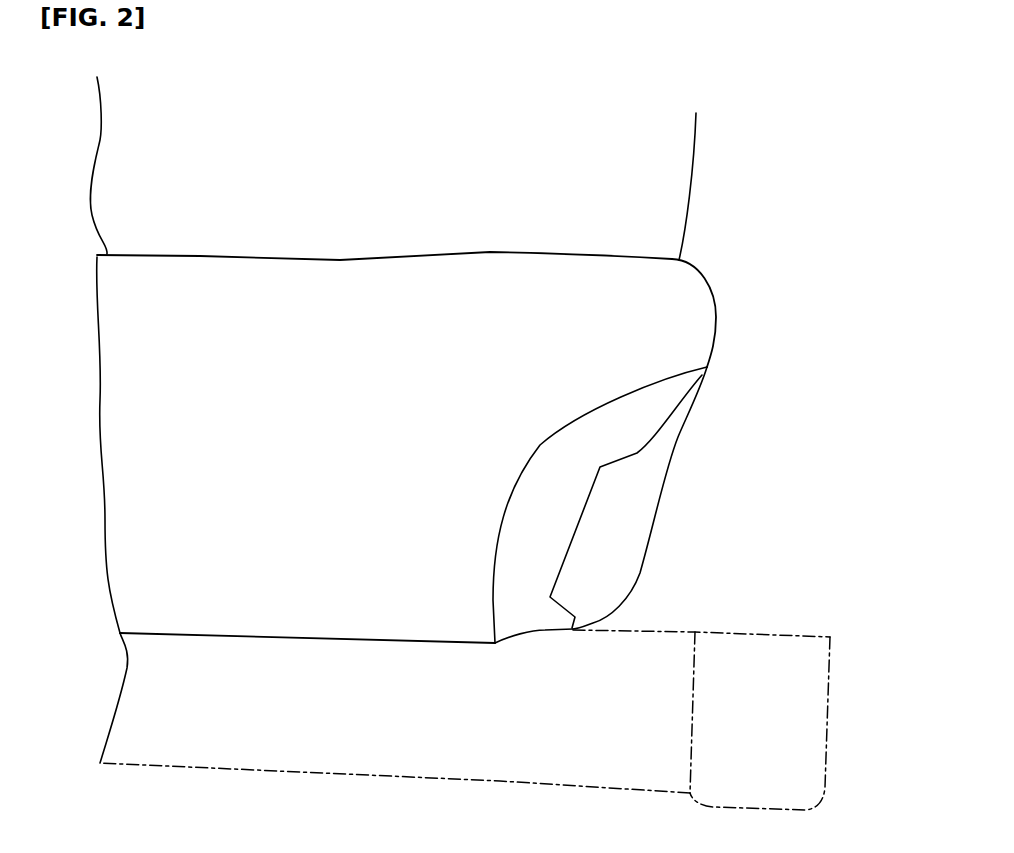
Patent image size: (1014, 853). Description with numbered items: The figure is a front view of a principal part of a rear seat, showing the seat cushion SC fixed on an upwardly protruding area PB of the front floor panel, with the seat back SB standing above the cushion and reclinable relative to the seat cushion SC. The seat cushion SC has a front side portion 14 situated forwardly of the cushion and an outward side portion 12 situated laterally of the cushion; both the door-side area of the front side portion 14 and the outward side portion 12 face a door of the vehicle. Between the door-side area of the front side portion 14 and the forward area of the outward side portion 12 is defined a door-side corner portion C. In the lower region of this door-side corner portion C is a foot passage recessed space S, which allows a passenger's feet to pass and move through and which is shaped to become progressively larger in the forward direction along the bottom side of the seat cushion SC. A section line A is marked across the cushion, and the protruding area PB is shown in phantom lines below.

The front side portion 14 is at (286, 428).
The outward side portion 12 is at (678, 437).
The seat back SB is at (431, 157).
The seat cushion SC is at (720, 297).
The foot passage recessed space S is at (533, 477).
The door-side corner portion C is at (593, 582).
The section line A- A is at (517, 307).
The upwardly protruding area PB is at (285, 720).